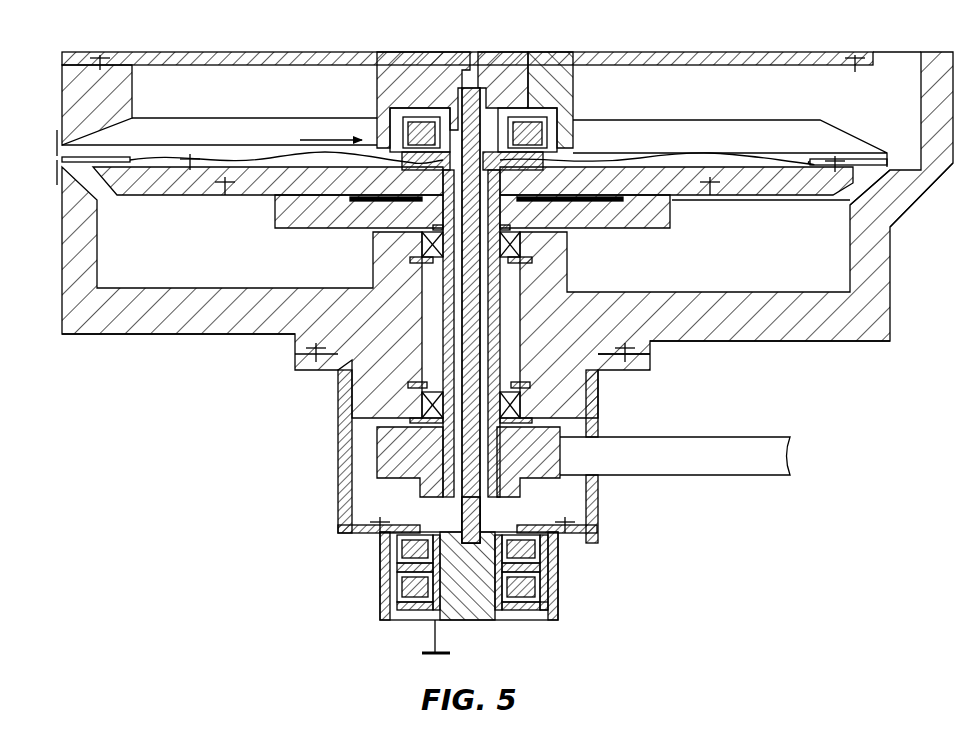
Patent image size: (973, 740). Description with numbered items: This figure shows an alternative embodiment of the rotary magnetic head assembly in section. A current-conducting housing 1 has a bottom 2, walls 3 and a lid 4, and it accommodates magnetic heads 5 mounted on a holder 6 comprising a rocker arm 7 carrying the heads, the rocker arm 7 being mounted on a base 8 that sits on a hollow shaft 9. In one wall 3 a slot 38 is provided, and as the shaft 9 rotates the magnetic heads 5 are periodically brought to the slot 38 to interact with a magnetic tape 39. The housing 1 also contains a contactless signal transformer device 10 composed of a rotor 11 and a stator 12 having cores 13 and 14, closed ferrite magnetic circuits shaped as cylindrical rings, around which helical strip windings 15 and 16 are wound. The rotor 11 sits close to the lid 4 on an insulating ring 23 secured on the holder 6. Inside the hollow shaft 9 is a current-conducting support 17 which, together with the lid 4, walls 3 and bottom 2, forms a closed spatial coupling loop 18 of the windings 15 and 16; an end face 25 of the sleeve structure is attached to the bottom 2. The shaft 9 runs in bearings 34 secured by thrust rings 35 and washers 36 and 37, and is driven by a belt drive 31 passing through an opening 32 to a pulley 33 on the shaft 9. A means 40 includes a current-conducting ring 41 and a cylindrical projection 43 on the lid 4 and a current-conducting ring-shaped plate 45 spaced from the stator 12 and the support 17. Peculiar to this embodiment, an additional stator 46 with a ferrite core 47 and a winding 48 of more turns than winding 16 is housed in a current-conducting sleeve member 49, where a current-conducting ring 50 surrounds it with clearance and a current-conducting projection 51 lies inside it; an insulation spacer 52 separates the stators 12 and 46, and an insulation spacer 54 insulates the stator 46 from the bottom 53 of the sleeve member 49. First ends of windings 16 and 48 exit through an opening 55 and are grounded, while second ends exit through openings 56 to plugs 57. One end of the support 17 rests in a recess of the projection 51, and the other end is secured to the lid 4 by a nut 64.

The current-conducting housing 1 is at (893, 240).
The bottom 2 is at (820, 342).
The walls 3 is at (915, 205).
The lid 4 is at (800, 60).
The magnetic heads 5 is at (100, 157).
The holder 6 is at (770, 203).
The rocker arm 7 is at (800, 186).
The base 8 is at (628, 228).
The hollow shaft 9 is at (500, 212).
The contactless signal transformer device 10 is at (331, 131).
The rotor 11 is at (547, 133).
The stator 12 is at (480, 520).
The core 13 is at (405, 120).
The core 14 is at (541, 545).
The winding 15 is at (527, 112).
The winding 16 is at (541, 567).
The current-conducting support 17 is at (462, 292).
The closed spatial coupling loop 18 is at (155, 340).
The insulating ring 23 is at (548, 158).
The end face 25 is at (628, 362).
The belt drive 31 is at (733, 437).
The opening 32 is at (598, 490).
The pulley 33 is at (405, 479).
The bearings 34 is at (422, 245).
The thrust rings 35 is at (410, 260).
The washer 36 is at (390, 201).
The washer 37 is at (410, 421).
The slot 38 is at (57, 172).
The magnetic tape 39 is at (57, 140).
The means 40 is at (365, 133).
The current-conducting ring 41 is at (392, 115).
The cylindrical projection 43 is at (425, 90).
The current-conducting ring-shaped plate 45 is at (340, 528).
The additional stator 46 is at (397, 585).
The core 47 is at (397, 600).
The winding 48 is at (548, 600).
The current-conducting sleeve member 49 is at (340, 470).
The current-conducting ring 50 is at (380, 560).
The current-conducting projection 51 is at (462, 622).
The insulation spacer 52 is at (541, 588).
The bottom 53 is at (545, 612).
The insulation spacer 54 is at (550, 614).
The opening 55 is at (450, 620).
The openings 56 is at (510, 612).
The plugs 57 is at (397, 610).
The nut 64 is at (518, 75).